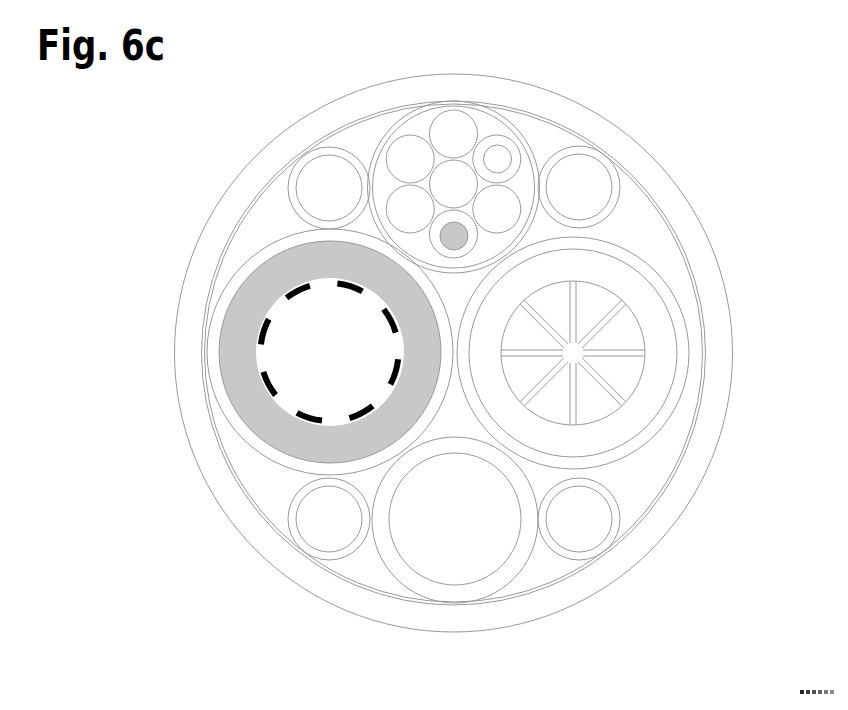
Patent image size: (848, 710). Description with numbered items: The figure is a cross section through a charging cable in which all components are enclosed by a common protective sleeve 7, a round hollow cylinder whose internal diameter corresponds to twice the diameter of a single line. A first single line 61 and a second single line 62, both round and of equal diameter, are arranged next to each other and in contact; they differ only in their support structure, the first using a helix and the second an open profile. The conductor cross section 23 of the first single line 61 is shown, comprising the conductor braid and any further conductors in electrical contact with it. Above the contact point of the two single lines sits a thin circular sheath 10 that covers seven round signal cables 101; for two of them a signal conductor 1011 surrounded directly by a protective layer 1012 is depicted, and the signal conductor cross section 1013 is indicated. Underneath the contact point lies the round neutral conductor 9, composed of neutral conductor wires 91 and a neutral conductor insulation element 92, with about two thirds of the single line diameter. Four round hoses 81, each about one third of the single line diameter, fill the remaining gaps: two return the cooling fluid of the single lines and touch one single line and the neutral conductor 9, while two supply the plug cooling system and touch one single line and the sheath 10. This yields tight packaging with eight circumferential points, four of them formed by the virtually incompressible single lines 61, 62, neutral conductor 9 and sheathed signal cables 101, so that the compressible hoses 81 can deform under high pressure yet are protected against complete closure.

The protective sleeve 7 is at (667, 508).
The sheath 10 is at (497, 140).
The signal cables 101 is at (517, 187).
The signal conductor 1011 is at (500, 158).
The protective layer 1012 is at (513, 153).
The signal conductor cross section 1013 is at (455, 230).
The hoses 81 is at (305, 158).
The conductor cross section 23 is at (233, 392).
The first single line 61 is at (268, 367).
The second single line 62 is at (637, 373).
The neutral conductor 9 is at (430, 562).
The neutral conductor wires 91 is at (432, 570).
The neutral conductor insulation element 92 is at (450, 593).